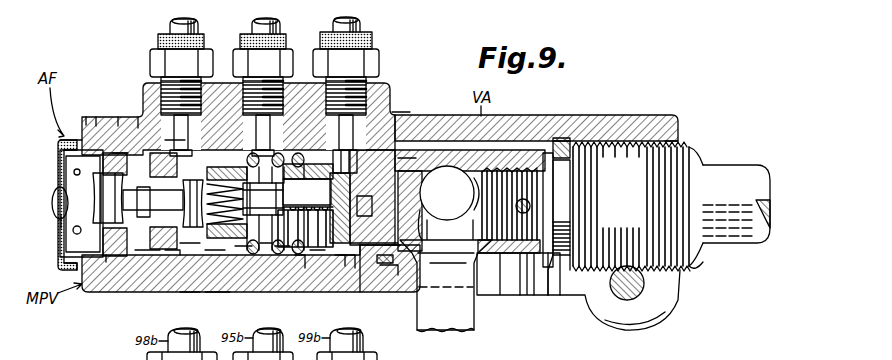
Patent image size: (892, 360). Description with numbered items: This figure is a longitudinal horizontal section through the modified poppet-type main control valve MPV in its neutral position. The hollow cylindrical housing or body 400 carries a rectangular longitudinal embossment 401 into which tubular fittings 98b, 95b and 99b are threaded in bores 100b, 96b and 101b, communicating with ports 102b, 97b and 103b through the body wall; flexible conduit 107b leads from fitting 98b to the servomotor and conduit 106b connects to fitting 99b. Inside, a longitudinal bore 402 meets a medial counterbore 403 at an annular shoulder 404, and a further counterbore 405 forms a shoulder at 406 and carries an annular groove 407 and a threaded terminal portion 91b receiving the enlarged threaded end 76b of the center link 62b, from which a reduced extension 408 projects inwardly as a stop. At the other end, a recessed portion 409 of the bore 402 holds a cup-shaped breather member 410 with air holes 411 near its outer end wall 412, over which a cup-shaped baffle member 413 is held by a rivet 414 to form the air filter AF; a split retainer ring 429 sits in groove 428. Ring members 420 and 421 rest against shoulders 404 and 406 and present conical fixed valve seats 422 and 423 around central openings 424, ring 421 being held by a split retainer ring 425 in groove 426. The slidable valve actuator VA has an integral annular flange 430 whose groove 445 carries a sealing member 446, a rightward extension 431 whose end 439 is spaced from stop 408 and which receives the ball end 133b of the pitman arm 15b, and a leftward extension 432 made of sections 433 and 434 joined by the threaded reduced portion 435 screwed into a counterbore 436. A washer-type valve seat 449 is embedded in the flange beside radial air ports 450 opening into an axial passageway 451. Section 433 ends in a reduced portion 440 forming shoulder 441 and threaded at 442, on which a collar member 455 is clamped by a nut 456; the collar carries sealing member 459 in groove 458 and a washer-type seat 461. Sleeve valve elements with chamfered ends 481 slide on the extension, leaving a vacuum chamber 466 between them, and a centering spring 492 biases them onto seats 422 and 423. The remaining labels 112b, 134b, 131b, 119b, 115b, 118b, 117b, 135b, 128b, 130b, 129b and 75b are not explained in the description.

The tubular fitting 98b is at (168, 27).
The flexible conduit 107b is at (160, 42).
The tubular fitting 95b is at (250, 27).
The packing ring 112b is at (243, 43).
The tubular fitting 99b is at (336, 28).
The flexible conduit 106b is at (368, 42).
The longitudinal embossment 401 is at (150, 92).
The housing or body 400 is at (640, 115).
The bore 100b is at (201, 97).
The bore 96b is at (283, 97).
The bore 101b is at (368, 100).
The port 102b is at (190, 136).
The port 97b is at (275, 136).
The port 103b is at (358, 138).
The fixed valve seat 422 is at (210, 150).
The fixed valve seat 423 is at (276, 150).
The terminal recessed portion 409 is at (92, 113).
The breather member 410 is at (100, 117).
The annular internal groove 428 is at (125, 117).
The central opening 424 is at (146, 103).
The washer-type valve seat 461 is at (168, 135).
The reduced diameter portion 440 is at (128, 145).
The external annular groove 445 is at (408, 115).
The annular groove 407 is at (560, 138).
The reduced extension 408 is at (572, 135).
The threaded terminal portion 91b is at (676, 121).
The air holes 411 is at (64, 171).
The baffle member 413 is at (64, 133).
The outer end wall 412 is at (60, 144).
The rivet 414 is at (54, 208).
The external threads 442 is at (60, 222).
The collar member 455 is at (104, 165).
The nut 456 is at (97, 226).
The split retainer ring 429 is at (78, 268).
The annular shoulder 441 is at (148, 200).
The counterbore 436 is at (245, 203).
The radial air ports 450 is at (305, 213).
The washer-type valve seat 449 is at (362, 170).
The axial passageway 451 is at (366, 202).
The cylindrical section 434 is at (372, 228).
The split retainer ring 425 is at (375, 268).
The counterbore 405 is at (359, 268).
The chamfer 481 is at (410, 161).
The ball end 133b is at (449, 193).
The seat 134b is at (422, 211).
The pitman arm 15b is at (462, 330).
The fitting 131b is at (490, 253).
The body 119b is at (480, 292).
The rightward projecting reduced cylindrical extension 431 is at (527, 290).
The end of extension 439 is at (560, 295).
The lobe 115b is at (586, 300).
The bore 118b is at (664, 296).
The boss 117b is at (650, 322).
The spring 135b is at (477, 207).
The plug 128b is at (530, 204).
The seat 130b is at (553, 212).
The stem 129b is at (562, 228).
The enlarged threaded end 76b is at (668, 160).
The center link 62b is at (755, 172).
The shoulder 75b is at (700, 252).
The flexible sealing member 459 is at (115, 262).
The external annular groove 458 is at (147, 256).
The longitudinal bore 402 is at (170, 258).
The cylindrical section 433 is at (185, 252).
The internal annular shoulder 404 is at (215, 262).
The ring member 420 is at (190, 293).
The counterbore 403 is at (216, 293).
The reduced diameter portion 435 is at (243, 260).
The leftward projecting reduced cylindrical extension 432 is at (266, 250).
The annular vacuum chamber 466 is at (280, 258).
The centering spring 492 is at (300, 270).
The ring member 421 is at (315, 262).
The annular internal shoulder 406 is at (340, 266).
The internal annular groove 426 is at (345, 270).
The annular flange 430 is at (392, 255).
The flexible sealing member 446 is at (388, 270).